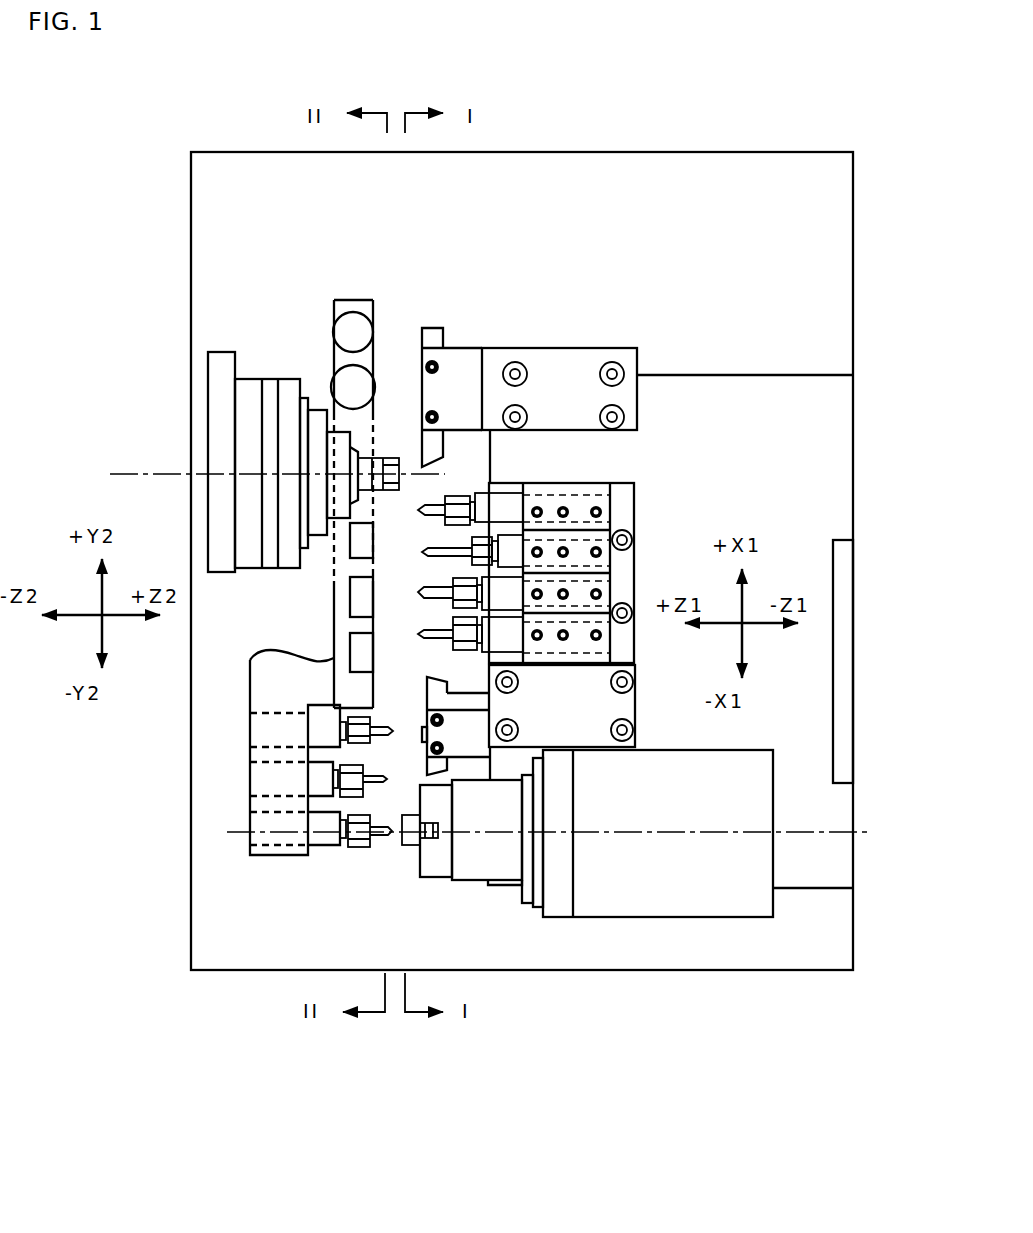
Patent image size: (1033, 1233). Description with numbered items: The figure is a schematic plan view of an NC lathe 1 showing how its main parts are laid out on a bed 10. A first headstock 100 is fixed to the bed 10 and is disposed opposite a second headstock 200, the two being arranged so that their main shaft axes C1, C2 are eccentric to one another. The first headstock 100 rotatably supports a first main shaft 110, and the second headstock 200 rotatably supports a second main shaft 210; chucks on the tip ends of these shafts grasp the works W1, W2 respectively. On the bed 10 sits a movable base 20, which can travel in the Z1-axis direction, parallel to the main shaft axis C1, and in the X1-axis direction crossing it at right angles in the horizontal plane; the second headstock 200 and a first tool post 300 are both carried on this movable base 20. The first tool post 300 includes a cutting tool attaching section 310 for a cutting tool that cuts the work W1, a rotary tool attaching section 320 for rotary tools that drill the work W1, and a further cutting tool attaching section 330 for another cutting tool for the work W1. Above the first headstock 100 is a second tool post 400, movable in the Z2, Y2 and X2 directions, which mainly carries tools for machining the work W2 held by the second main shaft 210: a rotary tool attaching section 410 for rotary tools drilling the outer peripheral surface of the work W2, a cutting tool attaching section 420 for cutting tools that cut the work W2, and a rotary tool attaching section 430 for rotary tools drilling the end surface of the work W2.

The NC lathe 1 is at (469, 624).
The bed 10 is at (522, 532).
The movable base 20 is at (745, 596).
The first headstock 100 is at (352, 373).
The first main shaft 110 is at (411, 346).
The second headstock 200 is at (566, 914).
The second main shaft 210 is at (464, 931).
The first tool post 300 is at (579, 476).
The cutting tool attaching section 310 is at (529, 381).
The rotary tool attaching section 320 is at (557, 557).
The cutting tool attaching section 330 is at (572, 720).
The second tool post 400 is at (296, 632).
The rotary tool attaching section 410 is at (364, 461).
The cutting tool attaching section 420 is at (308, 597).
The rotary tool attaching section 430 is at (321, 803).
The work W1 is at (389, 512).
The work W2 is at (399, 868).
The main shaft axis C1 is at (256, 442).
The main shaft axis C2 is at (548, 940).